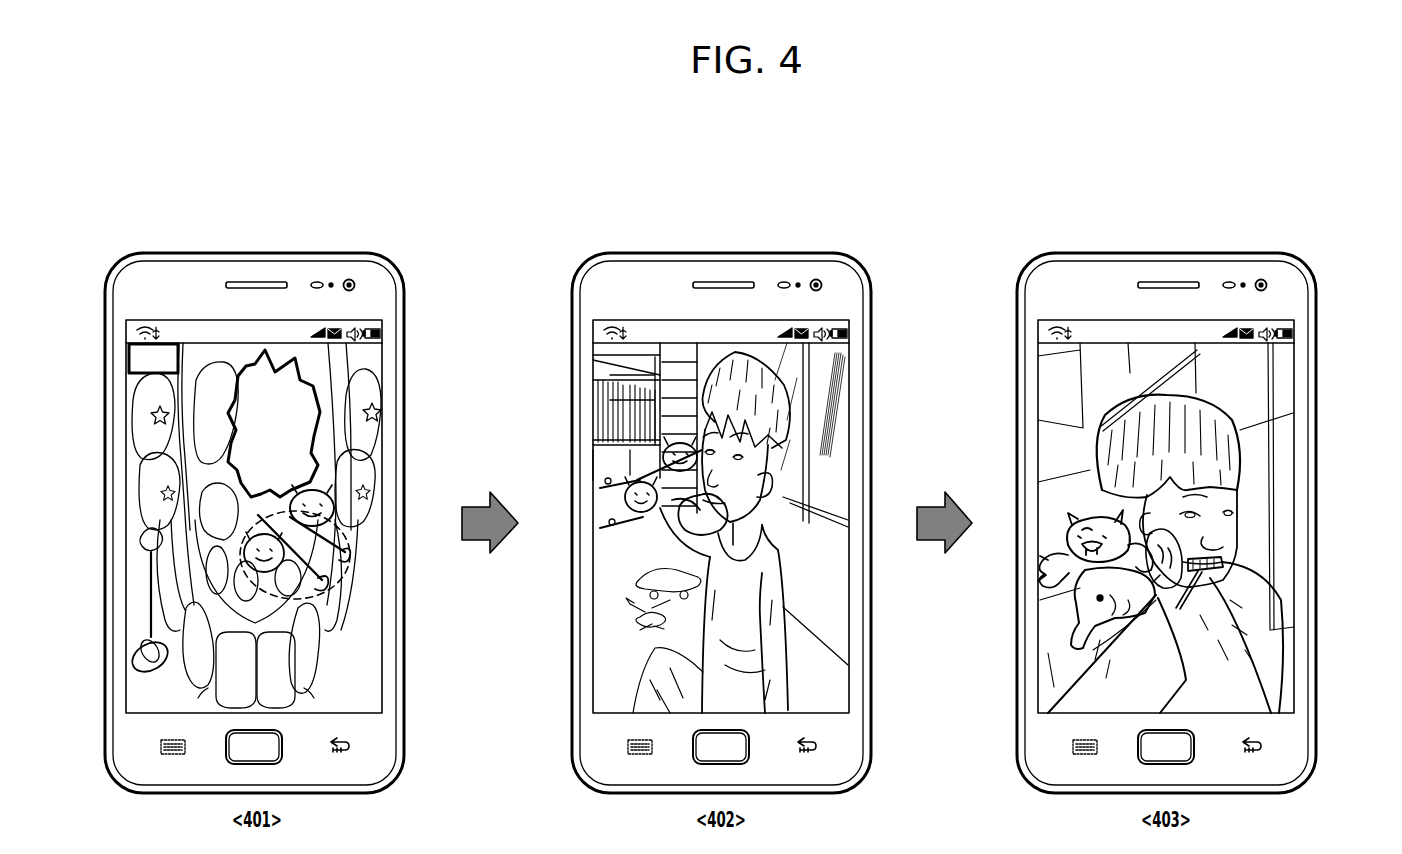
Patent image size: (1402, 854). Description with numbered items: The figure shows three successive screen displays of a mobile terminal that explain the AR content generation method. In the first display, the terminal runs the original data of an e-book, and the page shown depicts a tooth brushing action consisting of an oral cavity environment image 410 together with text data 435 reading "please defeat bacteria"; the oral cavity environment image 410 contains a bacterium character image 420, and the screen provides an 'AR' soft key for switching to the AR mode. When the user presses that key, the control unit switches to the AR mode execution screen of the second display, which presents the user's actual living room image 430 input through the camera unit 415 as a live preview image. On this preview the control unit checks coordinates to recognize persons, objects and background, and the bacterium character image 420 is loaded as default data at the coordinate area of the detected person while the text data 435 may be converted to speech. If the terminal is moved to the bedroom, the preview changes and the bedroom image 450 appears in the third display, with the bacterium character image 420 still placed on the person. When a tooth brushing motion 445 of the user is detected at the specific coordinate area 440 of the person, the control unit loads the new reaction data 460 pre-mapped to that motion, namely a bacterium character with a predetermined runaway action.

The oral cavity environment image 410 is at (330, 350).
The camera unit 415 is at (349, 280).
The bacterium character image 420 is at (325, 502).
The living room image 430 is at (826, 398).
The text data 435 is at (313, 433).
The specific coordinate area of the person 440 is at (767, 431).
The tooth brushing motion 445 is at (1231, 564).
The bedroom image 450 is at (1255, 382).
The new reaction data 460 is at (1044, 564).